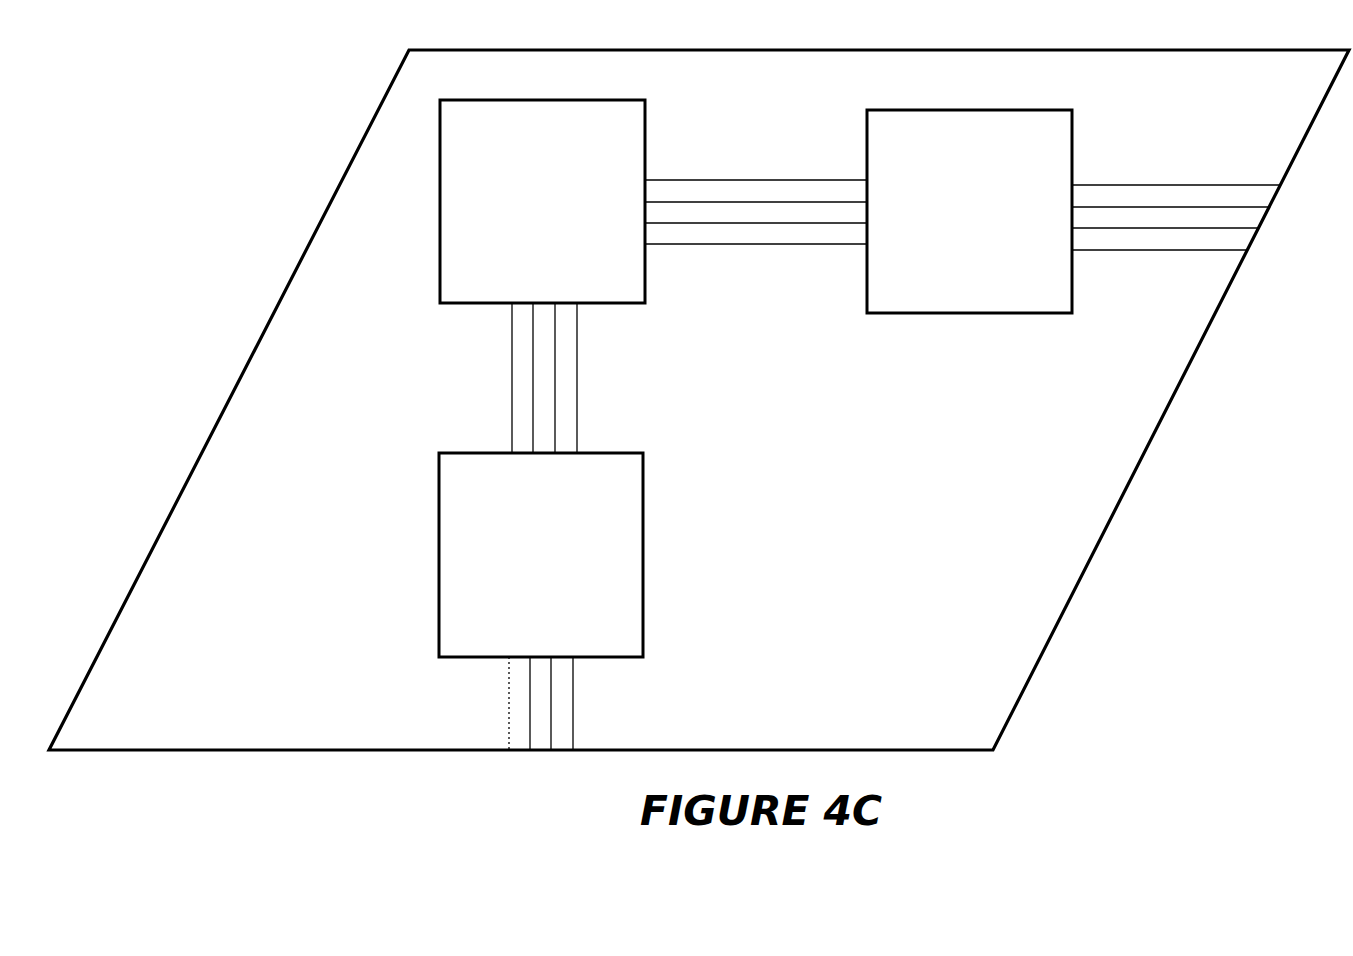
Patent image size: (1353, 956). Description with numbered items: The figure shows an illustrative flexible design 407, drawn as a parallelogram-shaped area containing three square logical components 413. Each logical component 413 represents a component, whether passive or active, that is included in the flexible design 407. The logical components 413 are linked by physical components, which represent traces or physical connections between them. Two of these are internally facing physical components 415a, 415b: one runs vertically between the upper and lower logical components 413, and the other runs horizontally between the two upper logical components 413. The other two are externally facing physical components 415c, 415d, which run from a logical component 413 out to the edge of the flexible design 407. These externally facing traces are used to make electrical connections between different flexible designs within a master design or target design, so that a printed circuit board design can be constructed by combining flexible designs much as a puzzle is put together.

The flexible design 407 is at (798, 410).
The logical component 413 is at (562, 212).
The internally facing physical component 415a is at (492, 387).
The internally facing physical component 415b is at (786, 152).
The externally facing physical component 415c is at (1202, 172).
The externally facing physical component 415d is at (610, 690).